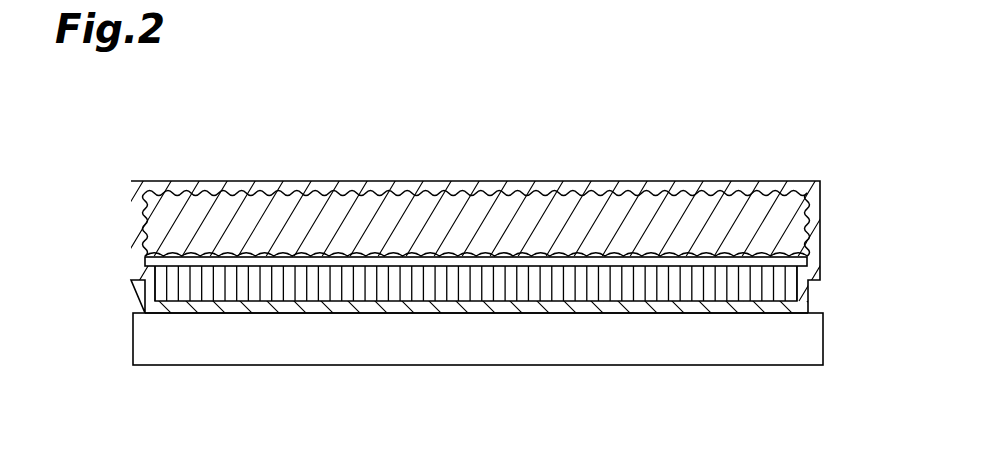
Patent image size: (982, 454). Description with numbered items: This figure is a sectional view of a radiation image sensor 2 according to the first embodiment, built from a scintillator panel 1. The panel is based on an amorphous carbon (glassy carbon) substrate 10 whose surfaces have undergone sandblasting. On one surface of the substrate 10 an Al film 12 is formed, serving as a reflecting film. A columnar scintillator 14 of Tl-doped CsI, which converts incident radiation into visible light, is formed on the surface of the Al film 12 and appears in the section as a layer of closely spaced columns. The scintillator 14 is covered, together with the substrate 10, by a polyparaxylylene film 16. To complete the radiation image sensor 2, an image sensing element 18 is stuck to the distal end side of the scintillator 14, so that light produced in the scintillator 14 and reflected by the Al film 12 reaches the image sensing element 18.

The scintillator panel 1 is at (708, 182).
The radiation image sensor 2 is at (522, 113).
The amorphous carbon substrate 10 is at (405, 206).
The Al film 12 is at (417, 258).
The columnar scintillator 14 is at (495, 293).
The polyparaxylylene film 16 is at (327, 313).
The image sensing element 18 is at (593, 357).